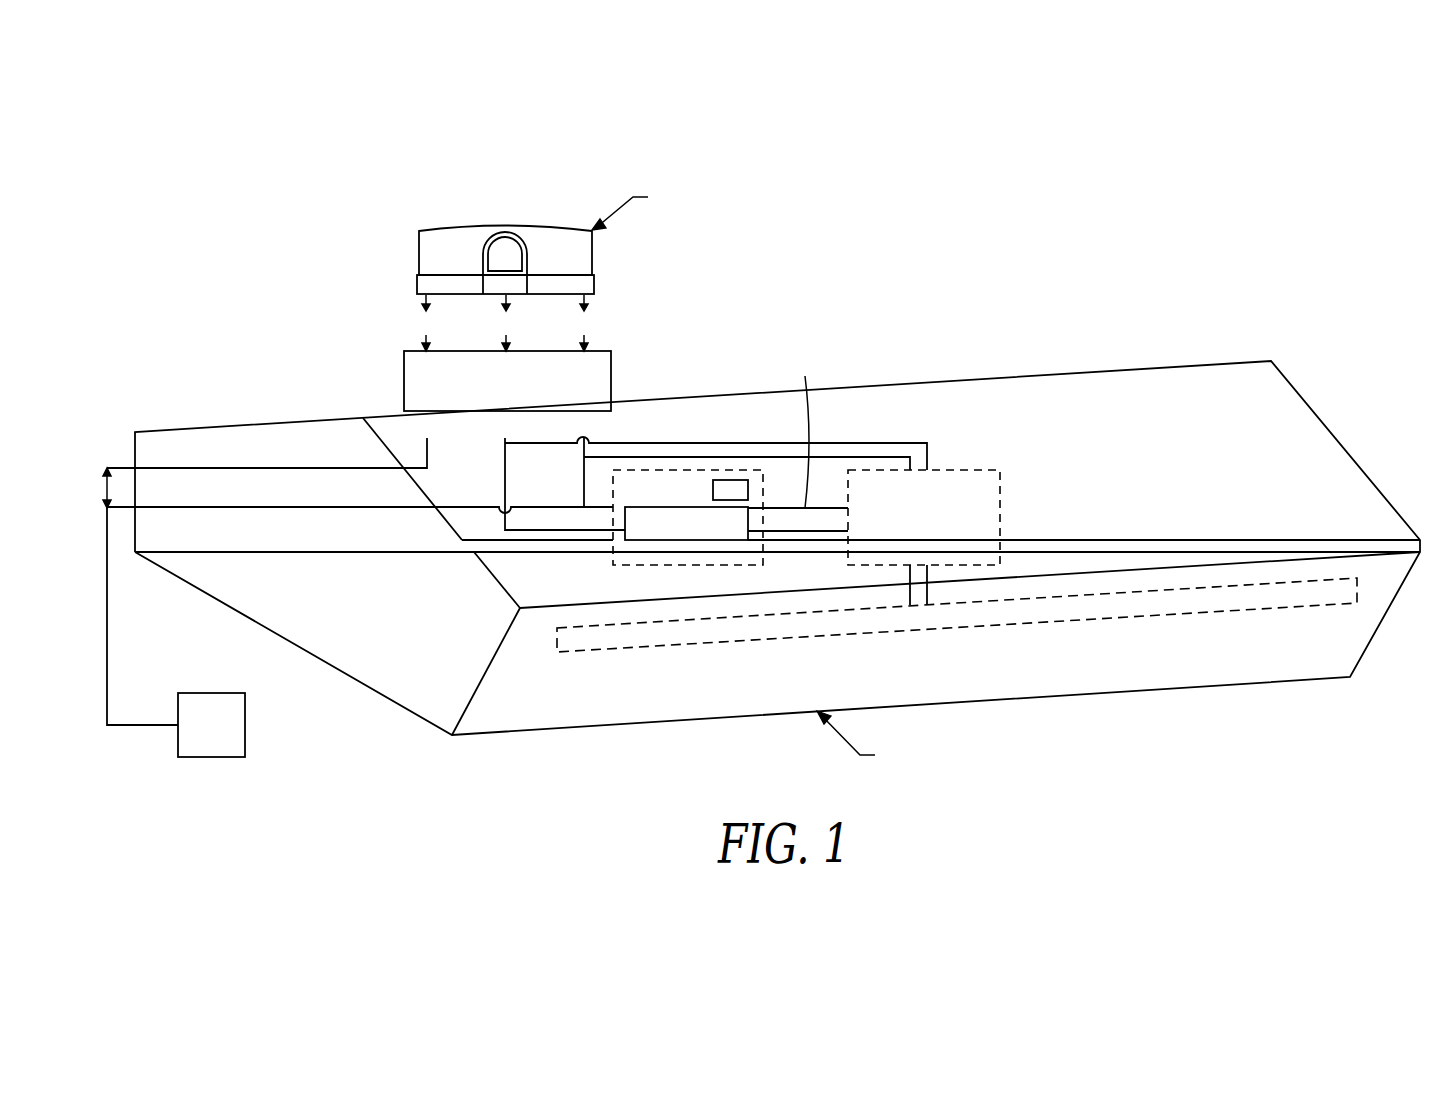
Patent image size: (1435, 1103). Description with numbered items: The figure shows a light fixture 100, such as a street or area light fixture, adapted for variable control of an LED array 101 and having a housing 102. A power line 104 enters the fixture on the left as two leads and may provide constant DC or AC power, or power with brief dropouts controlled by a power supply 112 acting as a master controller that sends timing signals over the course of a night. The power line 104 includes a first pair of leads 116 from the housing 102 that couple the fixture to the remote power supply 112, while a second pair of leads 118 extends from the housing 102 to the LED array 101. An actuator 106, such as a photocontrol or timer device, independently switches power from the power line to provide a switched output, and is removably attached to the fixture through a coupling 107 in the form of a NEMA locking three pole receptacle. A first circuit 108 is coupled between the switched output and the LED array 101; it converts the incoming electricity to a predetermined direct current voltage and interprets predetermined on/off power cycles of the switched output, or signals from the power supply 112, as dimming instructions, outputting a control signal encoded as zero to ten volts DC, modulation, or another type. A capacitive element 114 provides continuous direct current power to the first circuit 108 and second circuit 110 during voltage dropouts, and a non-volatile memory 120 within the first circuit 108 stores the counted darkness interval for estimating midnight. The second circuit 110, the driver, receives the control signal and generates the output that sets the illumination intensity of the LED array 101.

The light fixture 100 is at (1191, 197).
The LED array 101 is at (1237, 612).
The housing 102 is at (1133, 367).
The power line 104 is at (109, 463).
The actuator 106 is at (434, 226).
The coupling 107 is at (424, 349).
The first circuit 108 is at (659, 503).
The second circuit 110 is at (992, 501).
The power supply 112 is at (229, 746).
The capacitive element 114 is at (732, 480).
The first pair of leads 116 is at (274, 510).
The second pair of leads 118 is at (910, 592).
The non-volatile memory 120 is at (704, 540).